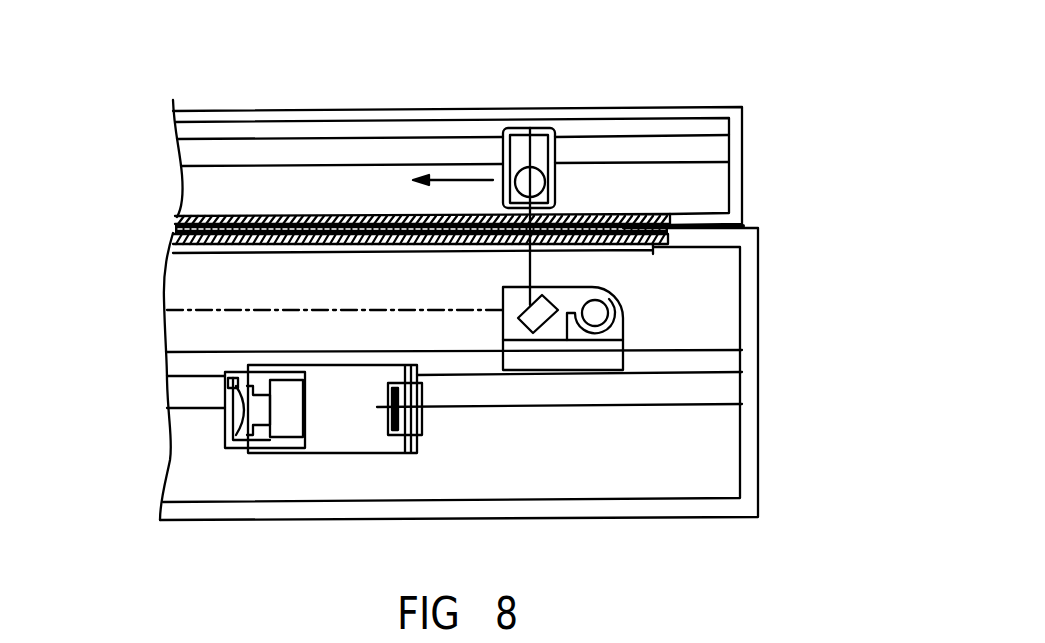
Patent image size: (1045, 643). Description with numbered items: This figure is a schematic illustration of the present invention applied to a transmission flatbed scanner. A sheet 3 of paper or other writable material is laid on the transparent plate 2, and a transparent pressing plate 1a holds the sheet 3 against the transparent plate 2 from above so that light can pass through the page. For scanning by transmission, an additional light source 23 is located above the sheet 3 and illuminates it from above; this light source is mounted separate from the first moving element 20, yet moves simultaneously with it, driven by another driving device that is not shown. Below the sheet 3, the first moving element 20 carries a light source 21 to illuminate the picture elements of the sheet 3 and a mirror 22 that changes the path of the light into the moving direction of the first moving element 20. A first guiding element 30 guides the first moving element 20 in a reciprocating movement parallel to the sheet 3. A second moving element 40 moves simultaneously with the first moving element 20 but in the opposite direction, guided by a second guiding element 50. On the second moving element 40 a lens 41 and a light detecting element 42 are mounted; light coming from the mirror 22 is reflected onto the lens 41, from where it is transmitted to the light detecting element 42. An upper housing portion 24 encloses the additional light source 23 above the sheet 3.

The transparent pressing plate 1a is at (409, 169).
The transparent plate 2 is at (214, 250).
The sheet 3 is at (270, 216).
The first moving element 20 is at (570, 354).
The light source 21 is at (597, 313).
The mirror 22 is at (520, 306).
The additional light source 23 is at (530, 128).
The upper housing 24 is at (668, 150).
The first guiding element 30 is at (517, 374).
The second moving element 40 is at (314, 473).
The lens 41 is at (244, 420).
The light detecting element 42 is at (405, 447).
The second guiding element 50 is at (710, 388).